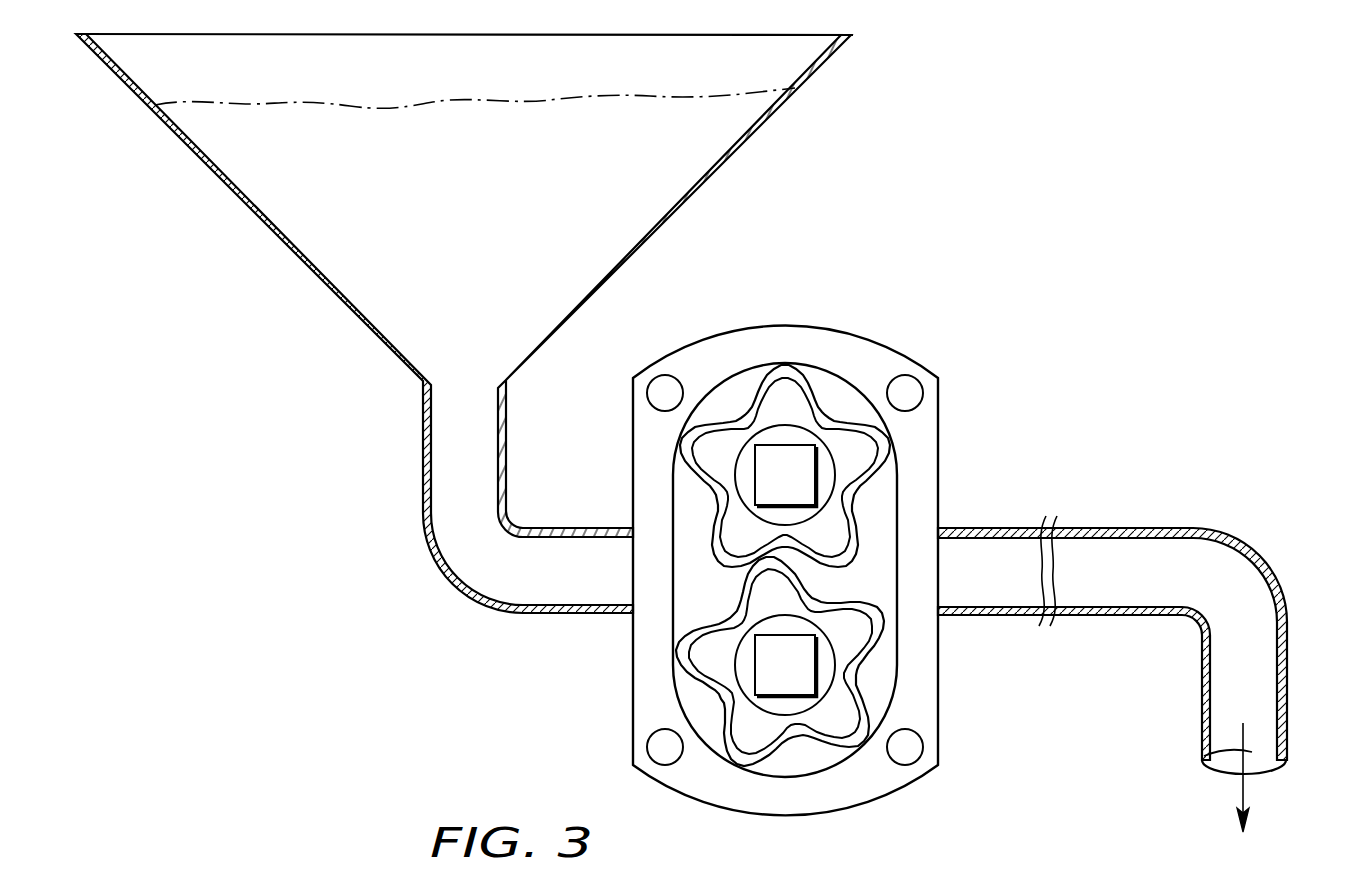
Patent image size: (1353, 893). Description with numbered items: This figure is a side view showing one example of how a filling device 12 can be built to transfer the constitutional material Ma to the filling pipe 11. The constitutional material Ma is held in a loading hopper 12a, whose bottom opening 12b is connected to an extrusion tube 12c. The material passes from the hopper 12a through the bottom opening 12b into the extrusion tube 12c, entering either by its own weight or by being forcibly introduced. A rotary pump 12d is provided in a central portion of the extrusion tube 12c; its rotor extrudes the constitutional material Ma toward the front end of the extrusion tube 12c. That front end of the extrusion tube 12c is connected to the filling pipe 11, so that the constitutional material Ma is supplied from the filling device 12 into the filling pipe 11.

The filling device 12 is at (701, 433).
The loading hopper 12a is at (160, 107).
The bottom opening 12b is at (447, 430).
The extrusion tube 12c is at (563, 593).
The rotary pump 12d is at (846, 571).
The filling pipe 11 is at (1257, 726).
The constitutional material Ma is at (675, 188).